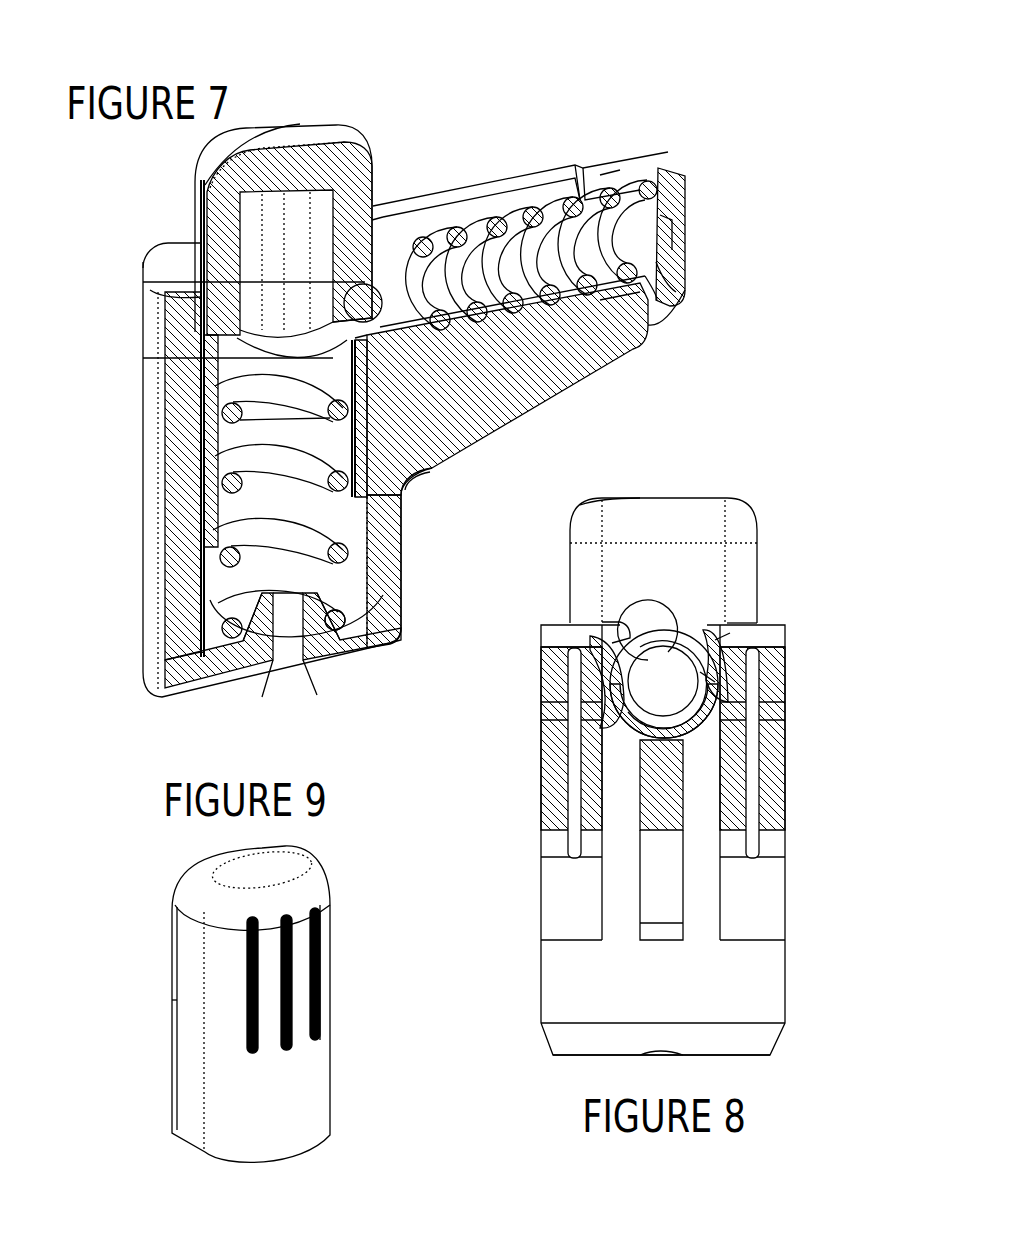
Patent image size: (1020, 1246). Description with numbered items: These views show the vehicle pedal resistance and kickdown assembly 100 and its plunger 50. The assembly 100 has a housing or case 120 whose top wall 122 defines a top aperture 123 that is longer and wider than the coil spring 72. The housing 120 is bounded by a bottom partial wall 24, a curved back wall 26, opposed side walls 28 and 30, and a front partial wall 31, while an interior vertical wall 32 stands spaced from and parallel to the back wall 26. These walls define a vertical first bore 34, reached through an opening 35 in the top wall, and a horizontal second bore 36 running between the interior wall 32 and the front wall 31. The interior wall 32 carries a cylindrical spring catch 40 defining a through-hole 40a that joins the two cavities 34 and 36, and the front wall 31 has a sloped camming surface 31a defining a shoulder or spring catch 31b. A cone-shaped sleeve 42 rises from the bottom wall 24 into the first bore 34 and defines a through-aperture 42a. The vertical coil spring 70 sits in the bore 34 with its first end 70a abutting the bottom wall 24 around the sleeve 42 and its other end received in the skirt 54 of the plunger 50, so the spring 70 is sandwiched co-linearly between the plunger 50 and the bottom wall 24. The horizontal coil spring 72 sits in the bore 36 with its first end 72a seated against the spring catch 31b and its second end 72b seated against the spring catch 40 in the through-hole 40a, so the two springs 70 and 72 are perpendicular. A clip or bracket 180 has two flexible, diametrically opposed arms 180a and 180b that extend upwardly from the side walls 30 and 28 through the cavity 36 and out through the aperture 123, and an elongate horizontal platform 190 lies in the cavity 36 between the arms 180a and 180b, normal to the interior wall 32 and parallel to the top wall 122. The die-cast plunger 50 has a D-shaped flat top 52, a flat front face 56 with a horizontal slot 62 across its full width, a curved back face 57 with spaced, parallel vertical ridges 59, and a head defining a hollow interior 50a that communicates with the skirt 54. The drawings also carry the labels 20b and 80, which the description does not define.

In FIG. 7, the housing lower portion 20b is at (160, 357).
In FIG. 7, the bottom partial wall 24 is at (197, 697).
In FIG. 8, the bottom partial wall 24 is at (717, 1055).
In FIG. 7, the back wall 26 is at (165, 408).
In FIG. 7, the side wall 28 is at (540, 387).
In FIG. 8, the side wall 28 is at (772, 798).
In FIG. 8, the side wall 30 is at (542, 783).
In FIG. 7, the front partial wall 31 is at (690, 198).
In FIG. 7, the sloped camming surface 31a is at (682, 288).
In FIG. 7, the spring catch 31b is at (690, 232).
In FIG. 7, the interior vertical wall 32 is at (388, 546).
In FIG. 7, the first bore 34 is at (245, 505).
In FIG. 7, the opening 35 is at (187, 243).
In FIG. 7, the second bore 36 is at (614, 369).
In FIG. 8, the second bore 36 is at (672, 692).
In FIG. 7, the spring catch 40 is at (425, 468).
In FIG. 7, the through-hole 40a is at (472, 478).
In FIG. 7, the cone-shaped sleeve 42 is at (235, 638).
In FIG. 7, the through-aperture 42a is at (285, 660).
In FIG. 7, the plunger 50 is at (291, 116).
In FIG. 8, the plunger 50 is at (668, 485).
In FIG. 9, the plunger 50 is at (316, 856).
In FIG. 7, the hollow interior 50a is at (305, 205).
In FIG. 7, the top flat surface 52 is at (250, 150).
In FIG. 8, the top flat surface 52 is at (696, 499).
In FIG. 9, the top flat surface 52 is at (245, 875).
In FIG. 7, the skirt 54 is at (245, 421).
In FIG. 7, the front face 56 is at (366, 205).
In FIG. 8, the front face 56 is at (745, 607).
In FIG. 9, the front face 56 is at (175, 935).
In FIG. 7, the back face 57 is at (201, 215).
In FIG. 9, the back face 57 is at (316, 1063).
In FIG. 9, the vertical ridges 59 is at (315, 998).
In FIG. 7, the slot 62 is at (143, 283).
In FIG. 9, the slot 62 is at (172, 1001).
In FIG. 7, the coil spring 70 is at (240, 586).
In FIG. 7, the first end 70a is at (337, 635).
In FIG. 7, the coil spring 72 is at (612, 166).
In FIG. 8, the coil spring 72 is at (666, 617).
In FIG. 7, the first end 72a is at (660, 188).
In FIG. 7, the second end 72b is at (460, 188).
In FIG. 7, the channel 80 is at (474, 428).
In FIG. 7, the vehicle pedal resistance and kickdown assembly 100 is at (511, 132).
In FIG. 8, the vehicle pedal resistance and kickdown assembly 100 is at (795, 552).
In FIG. 7, the housing 120 is at (467, 170).
In FIG. 8, the housing 120 is at (800, 762).
In FIG. 7, the top wall 122 is at (622, 176).
In FIG. 8, the top wall 122 is at (730, 618).
In FIG. 7, the top aperture 123 is at (575, 185).
In FIG. 8, the top aperture 123 is at (605, 620).
In FIG. 7, the coil receiving clip 180 is at (540, 190).
In FIG. 8, the coil receiving clip 180 is at (730, 643).
In FIG. 8, the clip arm 180a is at (595, 653).
In FIG. 7, the clip arm 180b is at (548, 180).
In FIG. 8, the clip arm 180b is at (705, 677).
In FIG. 7, the horizontal platform 190 is at (662, 314).
In FIG. 8, the horizontal platform 190 is at (572, 703).